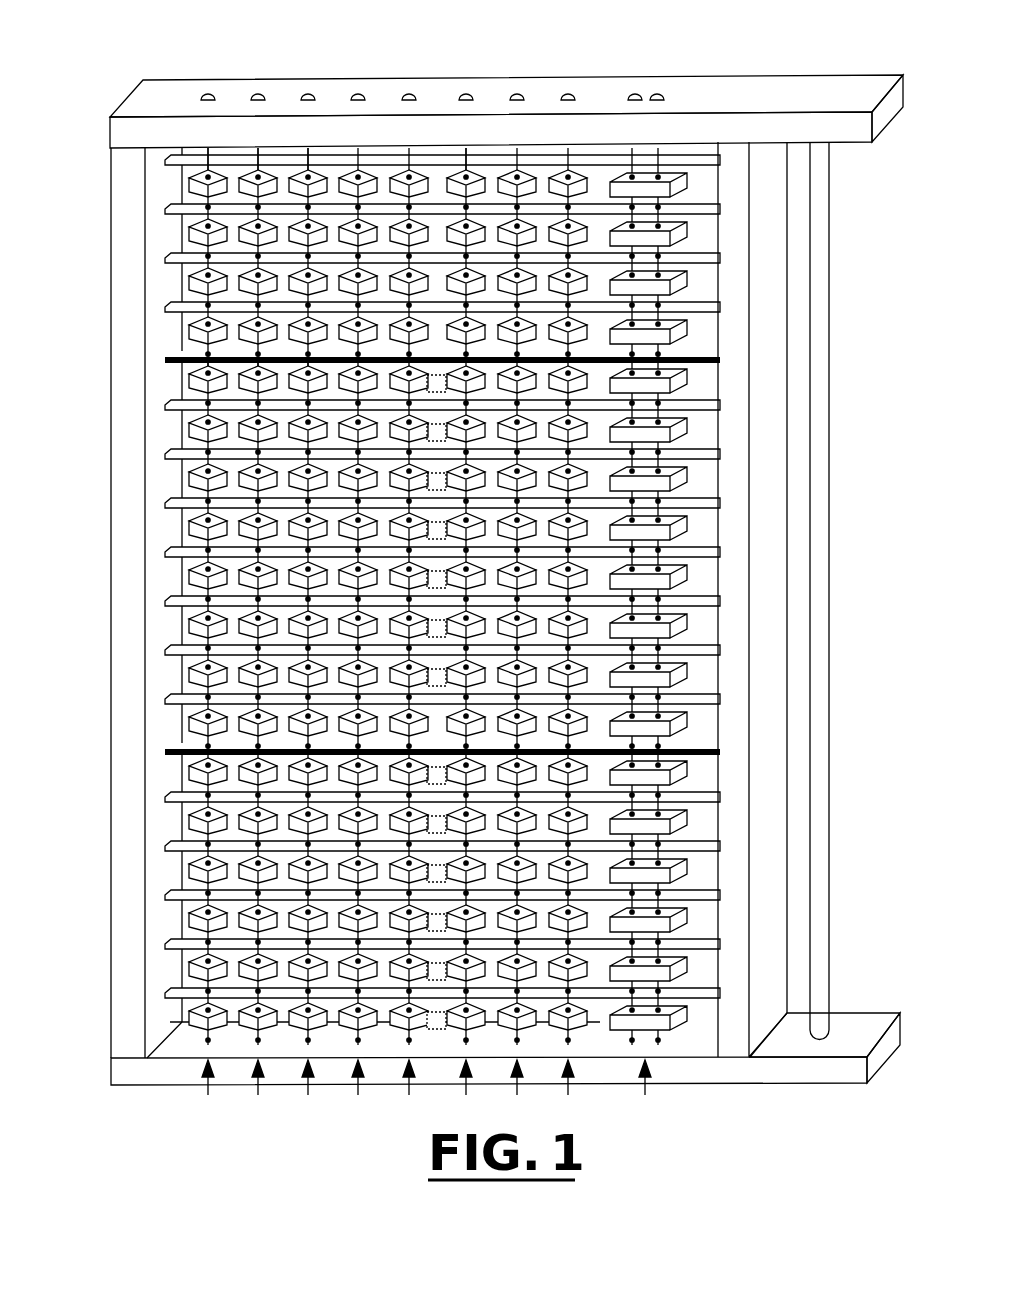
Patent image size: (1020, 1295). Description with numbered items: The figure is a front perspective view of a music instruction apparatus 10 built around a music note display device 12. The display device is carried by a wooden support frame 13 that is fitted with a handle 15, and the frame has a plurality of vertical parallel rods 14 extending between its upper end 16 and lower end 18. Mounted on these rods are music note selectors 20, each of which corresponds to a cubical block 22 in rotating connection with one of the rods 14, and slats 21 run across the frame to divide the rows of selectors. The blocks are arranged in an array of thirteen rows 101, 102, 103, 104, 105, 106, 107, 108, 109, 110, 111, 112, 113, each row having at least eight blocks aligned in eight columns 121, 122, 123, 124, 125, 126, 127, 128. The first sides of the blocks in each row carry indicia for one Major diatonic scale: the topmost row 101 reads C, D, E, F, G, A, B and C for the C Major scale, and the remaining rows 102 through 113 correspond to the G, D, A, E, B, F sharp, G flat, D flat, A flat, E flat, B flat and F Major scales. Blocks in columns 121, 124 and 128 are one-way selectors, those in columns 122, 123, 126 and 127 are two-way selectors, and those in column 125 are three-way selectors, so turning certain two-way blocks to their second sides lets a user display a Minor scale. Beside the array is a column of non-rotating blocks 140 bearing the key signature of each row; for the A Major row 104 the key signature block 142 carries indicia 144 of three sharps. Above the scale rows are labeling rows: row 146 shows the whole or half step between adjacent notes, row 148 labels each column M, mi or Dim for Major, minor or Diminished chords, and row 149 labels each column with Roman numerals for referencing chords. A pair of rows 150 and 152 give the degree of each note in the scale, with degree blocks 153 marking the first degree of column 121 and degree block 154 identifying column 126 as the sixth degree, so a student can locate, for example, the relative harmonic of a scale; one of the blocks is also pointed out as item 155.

The music instruction apparatus 10 is at (570, 58).
The music note display device 12 is at (347, 80).
The support frame 13 is at (432, 95).
The vertical parallel rods 14 is at (307, 158).
The handle 15 is at (828, 274).
The upper end 16 is at (887, 110).
The lower end 18 is at (878, 1066).
The music note selectors 20 is at (175, 1055).
The slats 21 is at (722, 990).
The cubical blocks 22 is at (205, 415).
The topmost row of blocks 101 is at (153, 385).
The row of blocks 102 is at (153, 434).
The row of blocks 103 is at (153, 483).
The row of blocks 104 is at (153, 532).
The row of blocks 105 is at (153, 581).
The row of blocks 106 is at (153, 630).
The row of blocks 107 is at (153, 679).
The row of blocks 108 is at (153, 777).
The row of blocks 109 is at (153, 826).
The row of blocks 110 is at (153, 875).
The row of blocks 111 is at (153, 924).
The row of blocks 112 is at (153, 973).
The row of blocks 113 is at (153, 1022).
The first column 121 is at (211, 638).
The second column 122 is at (262, 638).
The third column 123 is at (313, 638).
The fourth column 124 is at (365, 638).
The fifth column 125 is at (416, 638).
The sixth column 126 is at (470, 638).
The seventh column 127 is at (521, 638).
The eighth column 128 is at (573, 638).
The column of non-rotating blocks 140 is at (646, 638).
The key signature block 142 is at (687, 522).
The key signature indicia 144 is at (648, 531).
The tone-step labeling row 146 is at (605, 235).
The chord-type labeling row 148 is at (605, 284).
The Roman numeral labeling row 149 is at (605, 333).
The degree row 150 is at (605, 186).
The degree row 152 is at (605, 727).
The degree blocks 153 is at (196, 186).
The degree block 154 is at (466, 165).
The block 155 is at (207, 190).